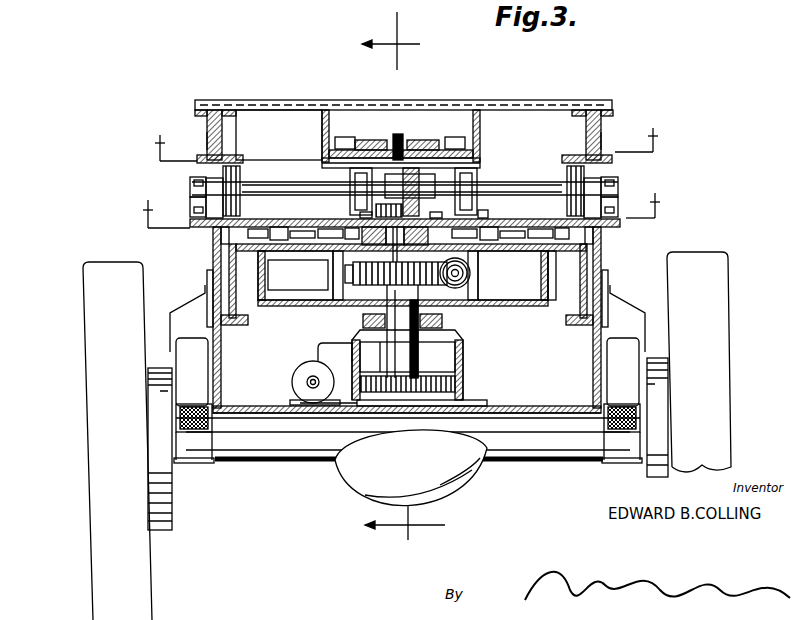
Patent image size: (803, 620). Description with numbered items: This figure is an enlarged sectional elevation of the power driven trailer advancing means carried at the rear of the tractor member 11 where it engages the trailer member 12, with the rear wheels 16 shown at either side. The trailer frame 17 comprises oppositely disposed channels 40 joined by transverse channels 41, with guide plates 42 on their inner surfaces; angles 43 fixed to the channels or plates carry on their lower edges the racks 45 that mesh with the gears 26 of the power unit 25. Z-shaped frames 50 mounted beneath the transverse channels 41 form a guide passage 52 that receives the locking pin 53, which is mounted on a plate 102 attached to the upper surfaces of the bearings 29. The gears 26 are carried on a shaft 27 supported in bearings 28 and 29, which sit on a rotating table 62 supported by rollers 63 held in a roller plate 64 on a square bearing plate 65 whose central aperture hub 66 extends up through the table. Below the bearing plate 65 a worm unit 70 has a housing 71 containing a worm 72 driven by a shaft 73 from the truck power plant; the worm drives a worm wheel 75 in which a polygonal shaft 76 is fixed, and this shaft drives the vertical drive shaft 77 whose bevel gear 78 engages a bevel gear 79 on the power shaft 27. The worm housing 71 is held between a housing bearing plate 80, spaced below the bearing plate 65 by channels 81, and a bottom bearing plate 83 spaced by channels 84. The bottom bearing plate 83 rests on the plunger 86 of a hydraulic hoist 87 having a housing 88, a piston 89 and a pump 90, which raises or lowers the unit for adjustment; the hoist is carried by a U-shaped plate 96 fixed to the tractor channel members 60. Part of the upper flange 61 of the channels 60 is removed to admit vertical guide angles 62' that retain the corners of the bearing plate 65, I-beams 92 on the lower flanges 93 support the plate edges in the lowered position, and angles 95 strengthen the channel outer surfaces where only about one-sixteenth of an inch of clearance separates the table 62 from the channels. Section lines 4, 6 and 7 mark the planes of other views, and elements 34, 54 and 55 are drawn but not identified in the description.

The section line 4- 4 is at (403, 282).
The section line 6- 6 is at (404, 134).
The section line 7- 7 is at (401, 202).
The truck or tractor member 11 is at (663, 246).
The trailer member 12 is at (192, 160).
The rear wheels 16 is at (88, 306).
The trailer frame 17 is at (248, 120).
The power driven unit 25 is at (410, 100).
The gears 26 is at (242, 208).
The shaft 27 is at (190, 189).
The bearing 28 is at (190, 204).
The bearing 29 is at (330, 176).
The partition wall 34 is at (236, 289).
The channels 40 is at (207, 132).
The transverse channels 41 is at (240, 102).
The guide plates 42 is at (214, 112).
The angles 43 is at (223, 149).
The racks 45 is at (242, 170).
The Z-shaped frames 50 is at (329, 112).
The guide passage 52 is at (370, 142).
The locking pin 53 is at (420, 142).
The plate 54 is at (366, 158).
The guide 55 is at (338, 145).
The channel members 60 is at (240, 306).
The upper flange 61 is at (359, 210).
The rotating table 62 is at (405, 213).
The vertical guide angles 62' is at (390, 245).
The rollers 63 is at (494, 226).
The roller plate 64 is at (540, 226).
The bearing plate 65 is at (306, 254).
The central aperture hub 66 is at (475, 210).
The worm unit 70 is at (330, 282).
The housing 71 is at (469, 276).
The worm 72 is at (464, 294).
The shaft 73 is at (450, 302).
The worm wheel 75 is at (364, 270).
The polygonal shaft 76 is at (447, 210).
The vertical drive shaft 77 is at (385, 209).
The bevel gear 78 is at (399, 184).
The bevel gear 79 is at (421, 172).
The housing bearing plate 80 is at (467, 284).
The channels 81 is at (488, 258).
The bottom bearing plate 83 is at (530, 302).
The channels 84 is at (580, 278).
The plunger 86 is at (418, 350).
The hydraulic hoist 87 is at (482, 393).
The housing 88 is at (463, 377).
The piston 89 is at (371, 377).
The pump 90 is at (300, 370).
The I-beams 92 is at (220, 282).
The lower flanges 93 is at (236, 326).
The angles 95 is at (215, 241).
The U-shaped plate 96 is at (222, 386).
The plate 102 is at (480, 161).